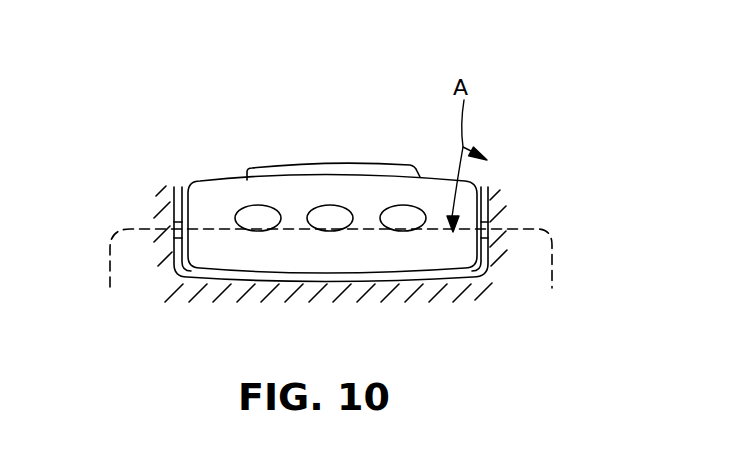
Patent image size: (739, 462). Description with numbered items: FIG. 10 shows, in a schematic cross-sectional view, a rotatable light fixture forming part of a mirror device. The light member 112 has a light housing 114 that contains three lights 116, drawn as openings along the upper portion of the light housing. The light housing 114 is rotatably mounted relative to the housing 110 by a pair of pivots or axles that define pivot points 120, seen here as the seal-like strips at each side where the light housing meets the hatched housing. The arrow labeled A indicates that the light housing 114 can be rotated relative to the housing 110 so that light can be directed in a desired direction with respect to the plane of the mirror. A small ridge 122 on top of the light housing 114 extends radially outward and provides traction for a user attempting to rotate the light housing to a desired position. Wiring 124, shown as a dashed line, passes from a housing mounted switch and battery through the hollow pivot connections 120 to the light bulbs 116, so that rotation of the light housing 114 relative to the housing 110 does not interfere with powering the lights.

The housing 110 is at (167, 268).
The light member 112 is at (332, 212).
The light housing 114 is at (214, 181).
The lights 116 is at (397, 231).
The pivot points 120 is at (182, 187).
The ridge 122 is at (357, 163).
The wiring 124 is at (552, 252).